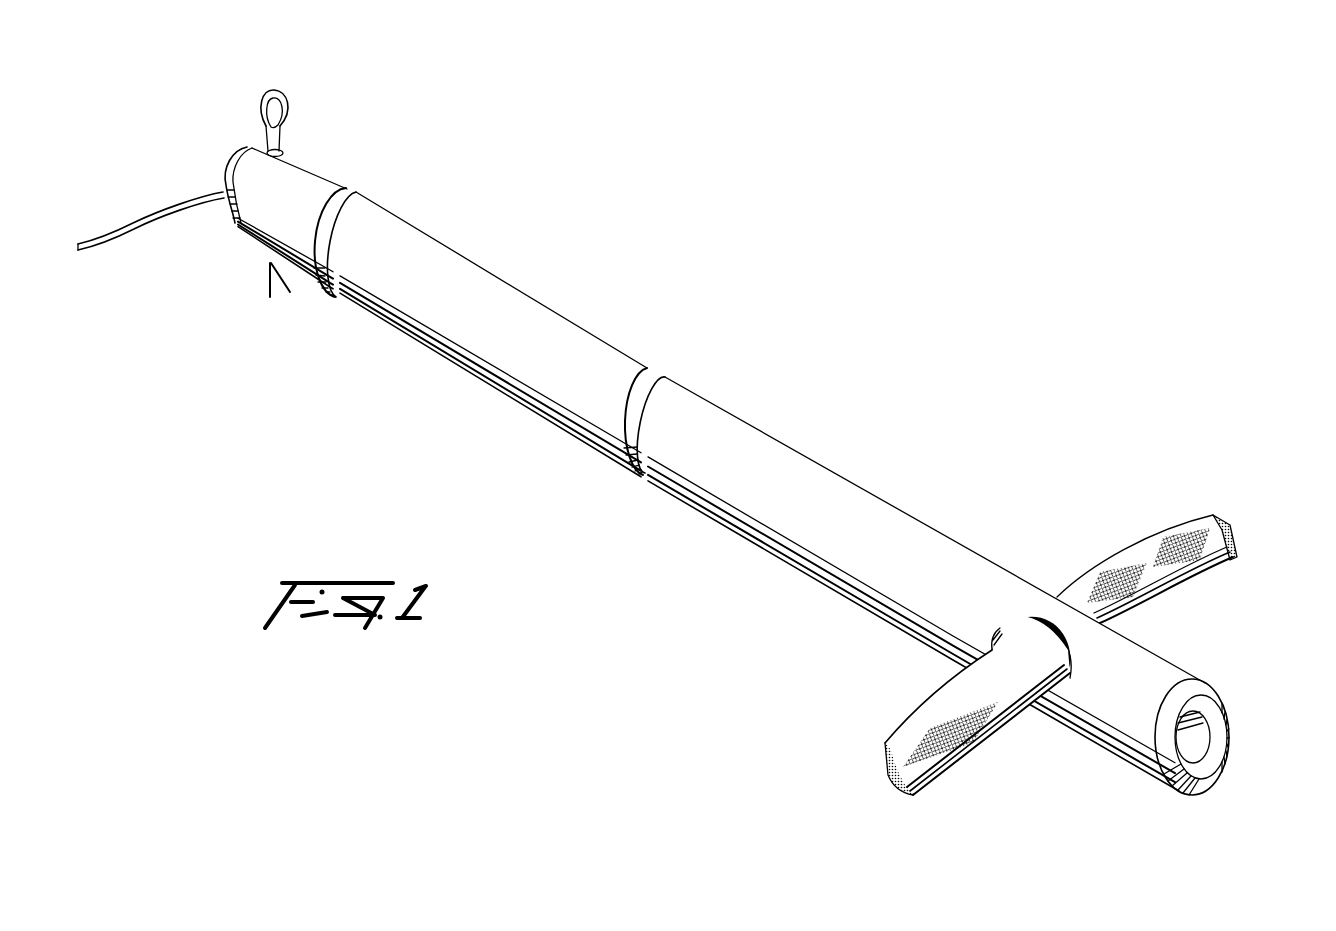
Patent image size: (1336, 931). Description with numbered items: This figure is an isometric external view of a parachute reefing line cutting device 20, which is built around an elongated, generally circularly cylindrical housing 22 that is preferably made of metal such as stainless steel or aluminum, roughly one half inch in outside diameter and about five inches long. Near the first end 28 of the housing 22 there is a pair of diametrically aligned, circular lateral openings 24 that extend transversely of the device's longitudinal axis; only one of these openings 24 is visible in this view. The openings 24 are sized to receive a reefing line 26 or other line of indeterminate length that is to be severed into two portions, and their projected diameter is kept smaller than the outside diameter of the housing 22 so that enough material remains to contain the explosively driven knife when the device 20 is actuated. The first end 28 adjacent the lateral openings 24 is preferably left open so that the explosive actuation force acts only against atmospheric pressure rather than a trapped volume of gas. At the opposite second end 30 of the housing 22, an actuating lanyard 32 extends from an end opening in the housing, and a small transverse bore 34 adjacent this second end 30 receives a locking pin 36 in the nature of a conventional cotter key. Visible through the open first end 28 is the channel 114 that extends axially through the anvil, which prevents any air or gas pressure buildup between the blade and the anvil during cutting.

The parachute reefing line cutting device 20 is at (847, 473).
The housing 22 is at (566, 398).
The lateral openings 24 is at (1058, 688).
The reefing line 26 is at (925, 726).
The first end 28 is at (1228, 722).
The second end 30 is at (227, 170).
The actuating lanyard 32 is at (121, 232).
The transverse bore 34 is at (284, 148).
The locking pin 36 is at (288, 100).
The channel 114 is at (1200, 744).